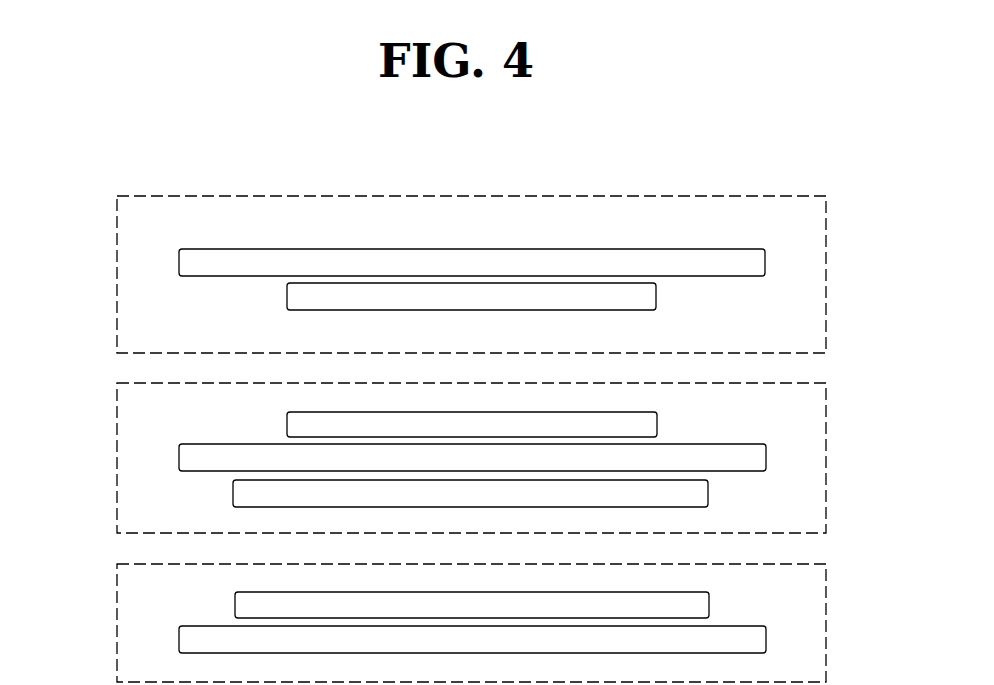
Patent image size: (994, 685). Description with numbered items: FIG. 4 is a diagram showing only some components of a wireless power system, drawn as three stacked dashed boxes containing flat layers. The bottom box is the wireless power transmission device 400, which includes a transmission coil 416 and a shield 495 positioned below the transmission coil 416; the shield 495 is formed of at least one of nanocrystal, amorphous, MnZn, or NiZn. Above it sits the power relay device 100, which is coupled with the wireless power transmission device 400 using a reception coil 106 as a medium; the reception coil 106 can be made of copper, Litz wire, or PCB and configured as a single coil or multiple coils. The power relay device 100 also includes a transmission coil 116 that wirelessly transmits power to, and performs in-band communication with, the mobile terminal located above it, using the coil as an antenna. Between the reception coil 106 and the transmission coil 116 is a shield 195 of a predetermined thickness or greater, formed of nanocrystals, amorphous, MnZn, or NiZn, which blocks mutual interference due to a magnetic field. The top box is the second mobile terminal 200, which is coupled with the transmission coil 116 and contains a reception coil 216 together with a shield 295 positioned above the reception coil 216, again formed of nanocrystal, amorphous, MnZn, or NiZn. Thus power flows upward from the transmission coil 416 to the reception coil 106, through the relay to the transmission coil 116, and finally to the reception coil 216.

The second mobile terminal 200 is at (826, 213).
The shield 295 is at (179, 262).
The reception coil 216 is at (287, 296).
The power relay device 100 is at (826, 410).
The transmission coil 116 is at (287, 418).
The shield 195 is at (179, 458).
The reception coil 106 is at (233, 493).
The wireless power transmission device 400 is at (826, 588).
The transmission coil 416 is at (235, 604).
The shield 495 is at (179, 640).